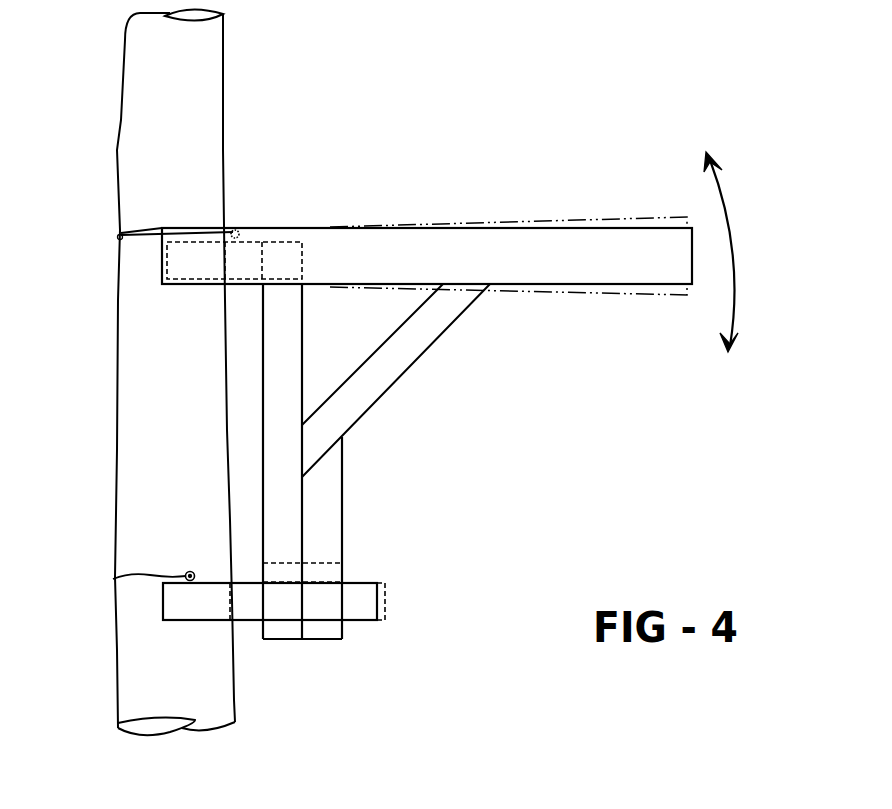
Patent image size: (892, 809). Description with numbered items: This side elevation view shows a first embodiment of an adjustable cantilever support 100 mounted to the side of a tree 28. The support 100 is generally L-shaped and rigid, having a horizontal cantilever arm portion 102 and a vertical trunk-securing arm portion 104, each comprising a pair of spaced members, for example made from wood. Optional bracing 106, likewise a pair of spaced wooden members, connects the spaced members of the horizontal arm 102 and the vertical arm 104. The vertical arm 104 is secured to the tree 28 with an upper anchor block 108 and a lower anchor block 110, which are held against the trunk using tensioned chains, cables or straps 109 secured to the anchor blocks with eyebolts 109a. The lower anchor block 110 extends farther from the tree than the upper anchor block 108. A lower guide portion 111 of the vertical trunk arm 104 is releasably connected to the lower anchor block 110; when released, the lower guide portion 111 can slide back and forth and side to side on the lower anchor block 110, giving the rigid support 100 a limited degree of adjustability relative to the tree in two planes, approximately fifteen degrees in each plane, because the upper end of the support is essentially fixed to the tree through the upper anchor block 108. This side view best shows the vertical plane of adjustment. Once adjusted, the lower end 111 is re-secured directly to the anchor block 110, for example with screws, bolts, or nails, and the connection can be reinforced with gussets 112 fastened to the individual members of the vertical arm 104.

The tree 28 is at (217, 73).
The adjustable cantilever support 100 is at (620, 460).
The horizontal cantilever arm portion 102 is at (470, 240).
The vertical trunk-securing arm portion 104 is at (292, 413).
The bracing 106 is at (437, 328).
The upper anchor block 108 is at (252, 257).
The tensioned chains, cables or straps 109 is at (140, 232).
The eyebolts 109a is at (236, 230).
The lower anchor block 110 is at (247, 612).
The lower guide portion 111 is at (352, 637).
The gussets 112 is at (327, 518).